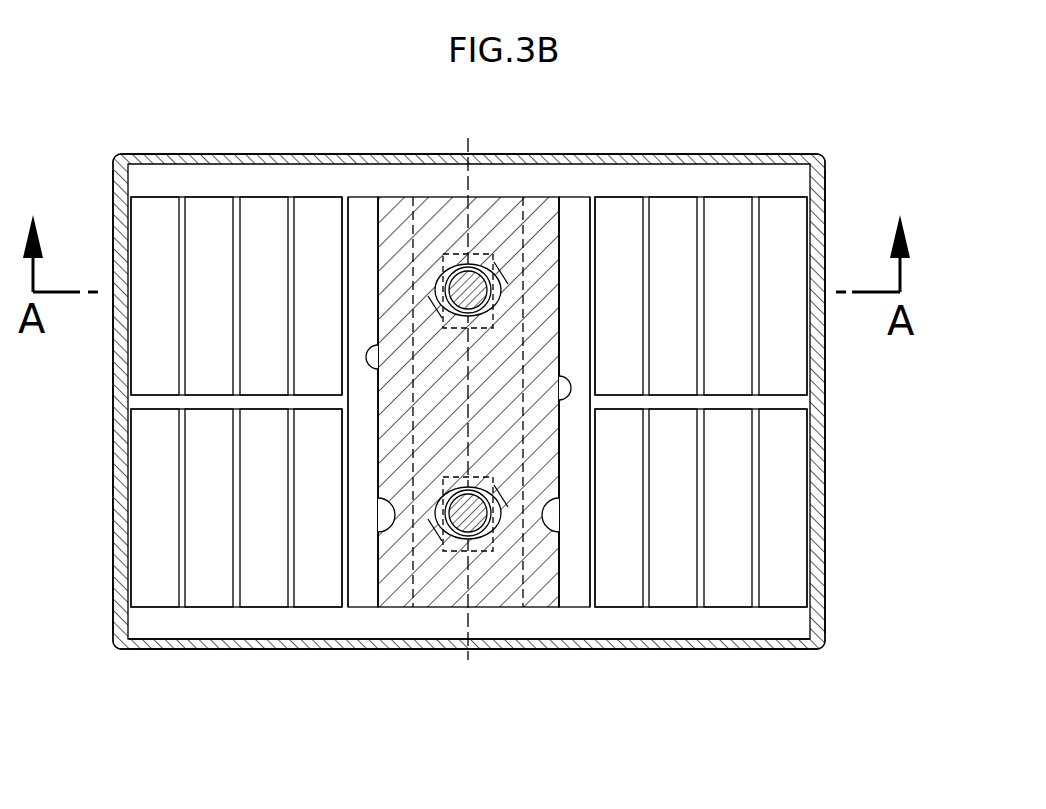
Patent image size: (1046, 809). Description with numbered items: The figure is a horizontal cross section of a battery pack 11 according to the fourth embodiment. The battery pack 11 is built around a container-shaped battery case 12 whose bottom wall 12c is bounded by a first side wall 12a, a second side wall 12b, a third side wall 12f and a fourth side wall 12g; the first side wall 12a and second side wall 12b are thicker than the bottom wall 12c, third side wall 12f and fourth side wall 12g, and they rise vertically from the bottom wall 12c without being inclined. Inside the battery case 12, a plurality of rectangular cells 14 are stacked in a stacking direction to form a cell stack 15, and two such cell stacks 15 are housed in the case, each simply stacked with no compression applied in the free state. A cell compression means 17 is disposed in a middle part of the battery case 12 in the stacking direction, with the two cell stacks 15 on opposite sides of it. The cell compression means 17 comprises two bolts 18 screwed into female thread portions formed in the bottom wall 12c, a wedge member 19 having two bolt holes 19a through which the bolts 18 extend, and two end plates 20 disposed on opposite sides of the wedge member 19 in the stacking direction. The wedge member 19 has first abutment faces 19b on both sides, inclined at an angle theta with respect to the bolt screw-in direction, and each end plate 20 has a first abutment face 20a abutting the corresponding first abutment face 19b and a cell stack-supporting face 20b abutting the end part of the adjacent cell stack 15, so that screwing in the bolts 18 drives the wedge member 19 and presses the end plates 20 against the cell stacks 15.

The battery pack 11 is at (372, 127).
The battery case 12 is at (195, 150).
The first side wall 12a is at (112, 436).
The second side wall 12b is at (826, 478).
The bottom wall 12c is at (428, 624).
The third side wall 12f is at (635, 155).
The fourth side wall 12g is at (640, 652).
The rectangular cell 14 is at (167, 315).
The cell stack 15 is at (301, 181).
The cell compression means 17 is at (436, 181).
The bolt 18 is at (477, 264).
The wedge member 19 is at (512, 189).
The bolt hole 19a is at (447, 272).
The first abutment face 19b is at (378, 370).
The end plate 20 is at (362, 612).
The first abutment face 20a is at (383, 533).
The cell stack-supporting face 20b is at (346, 268).